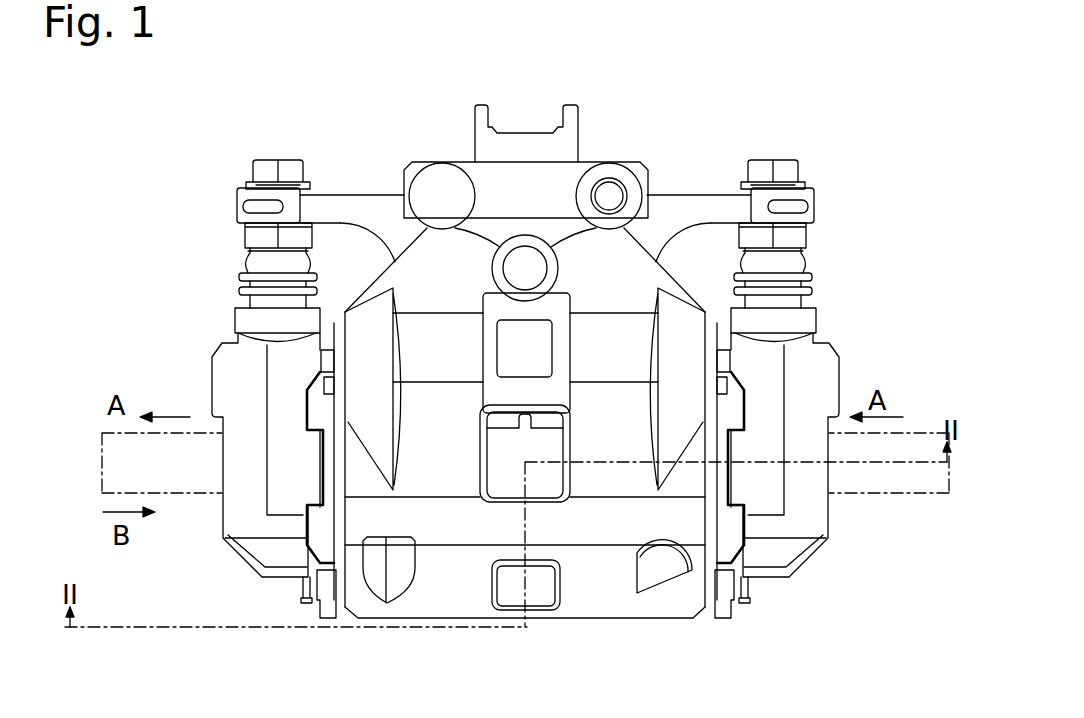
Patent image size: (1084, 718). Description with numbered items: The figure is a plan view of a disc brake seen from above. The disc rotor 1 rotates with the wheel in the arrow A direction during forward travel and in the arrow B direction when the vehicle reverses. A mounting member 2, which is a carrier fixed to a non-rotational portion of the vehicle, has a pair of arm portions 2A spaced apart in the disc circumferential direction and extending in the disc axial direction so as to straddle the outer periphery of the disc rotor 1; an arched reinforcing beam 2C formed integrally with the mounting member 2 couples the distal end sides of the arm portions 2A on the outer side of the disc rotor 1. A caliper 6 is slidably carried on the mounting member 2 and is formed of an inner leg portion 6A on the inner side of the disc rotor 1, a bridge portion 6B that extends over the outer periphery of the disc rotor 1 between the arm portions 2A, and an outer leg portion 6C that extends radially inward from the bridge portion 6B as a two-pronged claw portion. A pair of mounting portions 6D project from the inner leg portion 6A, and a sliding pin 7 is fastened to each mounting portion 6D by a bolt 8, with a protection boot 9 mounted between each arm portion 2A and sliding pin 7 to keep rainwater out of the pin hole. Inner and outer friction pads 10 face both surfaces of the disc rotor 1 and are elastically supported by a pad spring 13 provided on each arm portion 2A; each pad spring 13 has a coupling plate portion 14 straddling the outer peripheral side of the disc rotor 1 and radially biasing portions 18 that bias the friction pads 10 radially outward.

The disc rotor 1 is at (908, 432).
The mounting member 2 is at (763, 583).
The arm portion 2A is at (228, 382).
The reinforcing beam 2C is at (303, 558).
The caliper 6 is at (455, 158).
The inner leg portion 6A is at (577, 270).
The bridge portion 6B is at (452, 465).
The outer leg portion 6C is at (590, 617).
The mounting portion 6D is at (258, 207).
The sliding pin 7 is at (263, 238).
The bolt 8 is at (277, 166).
The protection boot 9 is at (250, 278).
The friction pad 10 is at (543, 422).
The pad spring 13 is at (303, 518).
The coupling plate portion 14 is at (328, 463).
The radially biasing portion 18 is at (333, 323).